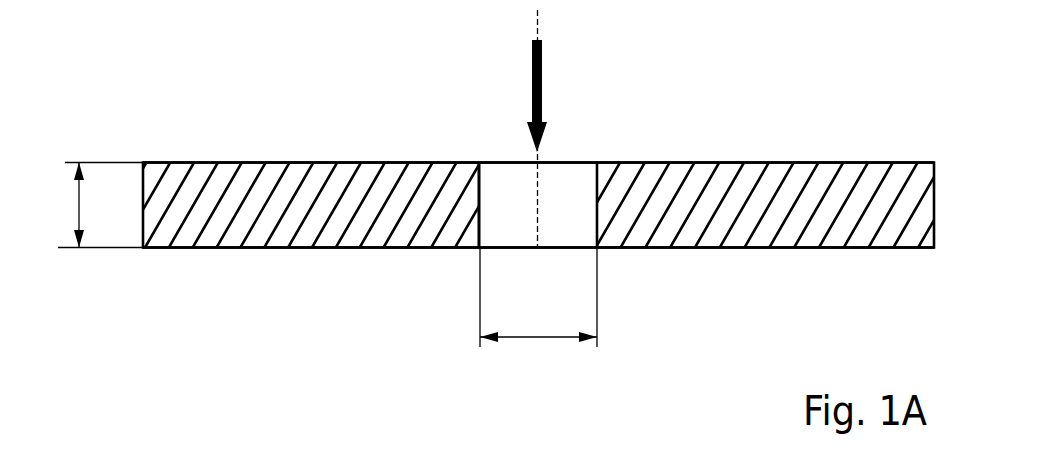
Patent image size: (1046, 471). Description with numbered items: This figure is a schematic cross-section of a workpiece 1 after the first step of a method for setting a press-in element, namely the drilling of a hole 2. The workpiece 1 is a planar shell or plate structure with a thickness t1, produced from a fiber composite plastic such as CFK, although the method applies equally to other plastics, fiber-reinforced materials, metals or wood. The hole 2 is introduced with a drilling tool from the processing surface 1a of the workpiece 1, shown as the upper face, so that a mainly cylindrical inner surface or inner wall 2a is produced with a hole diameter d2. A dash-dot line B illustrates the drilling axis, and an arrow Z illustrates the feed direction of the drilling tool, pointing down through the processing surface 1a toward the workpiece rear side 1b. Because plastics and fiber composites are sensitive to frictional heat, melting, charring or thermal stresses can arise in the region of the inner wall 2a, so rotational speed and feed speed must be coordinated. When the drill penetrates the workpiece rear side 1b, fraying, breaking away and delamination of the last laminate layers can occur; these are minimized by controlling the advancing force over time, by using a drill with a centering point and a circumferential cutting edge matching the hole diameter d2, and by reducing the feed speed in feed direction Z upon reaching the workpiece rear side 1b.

The workpiece 1 is at (868, 94).
The processing surface 1a is at (338, 162).
The workpiece rear side 1b is at (323, 248).
The hole 2 is at (573, 139).
The inner wall 2a is at (491, 213).
The feed direction Z is at (532, 73).
The drilling axis B is at (540, 23).
The thickness t1 is at (94, 205).
The hole diameter d2 is at (538, 298).